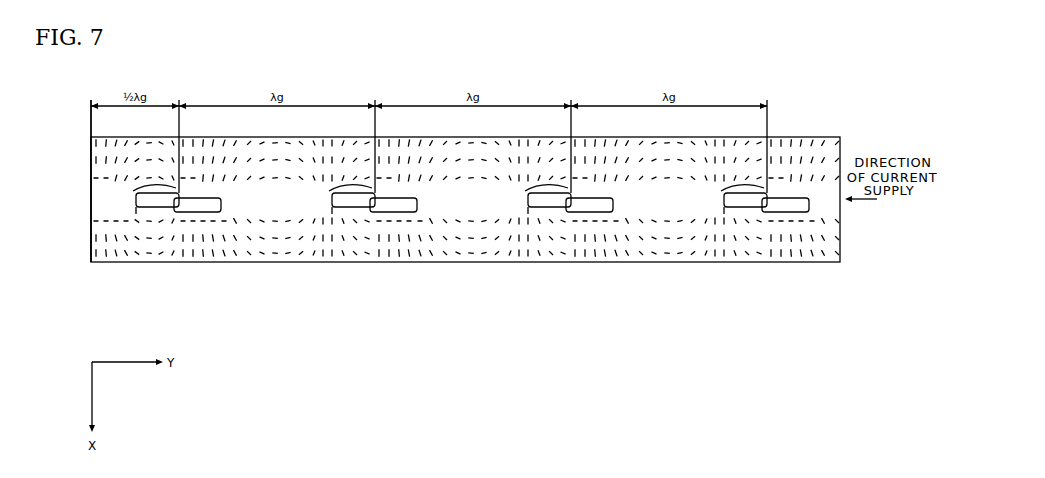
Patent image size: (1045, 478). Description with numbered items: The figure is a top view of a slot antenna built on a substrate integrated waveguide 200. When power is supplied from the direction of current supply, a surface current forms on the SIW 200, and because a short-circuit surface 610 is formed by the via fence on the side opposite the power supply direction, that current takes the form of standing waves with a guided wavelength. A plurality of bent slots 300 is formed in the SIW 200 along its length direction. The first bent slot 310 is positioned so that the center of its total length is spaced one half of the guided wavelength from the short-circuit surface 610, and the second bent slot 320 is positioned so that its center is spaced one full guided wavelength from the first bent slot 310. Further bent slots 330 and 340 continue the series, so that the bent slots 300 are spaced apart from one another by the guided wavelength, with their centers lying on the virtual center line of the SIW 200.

The substrate integrated waveguide 200 is at (773, 237).
The bent slots 300 is at (471, 279).
The first bent slot 310 is at (173, 212).
The second bent slot 320 is at (370, 212).
The bent slot 330 is at (566, 212).
The fourth feed portion 340 is at (765, 255).
The short-circuit surface 610 is at (91, 197).